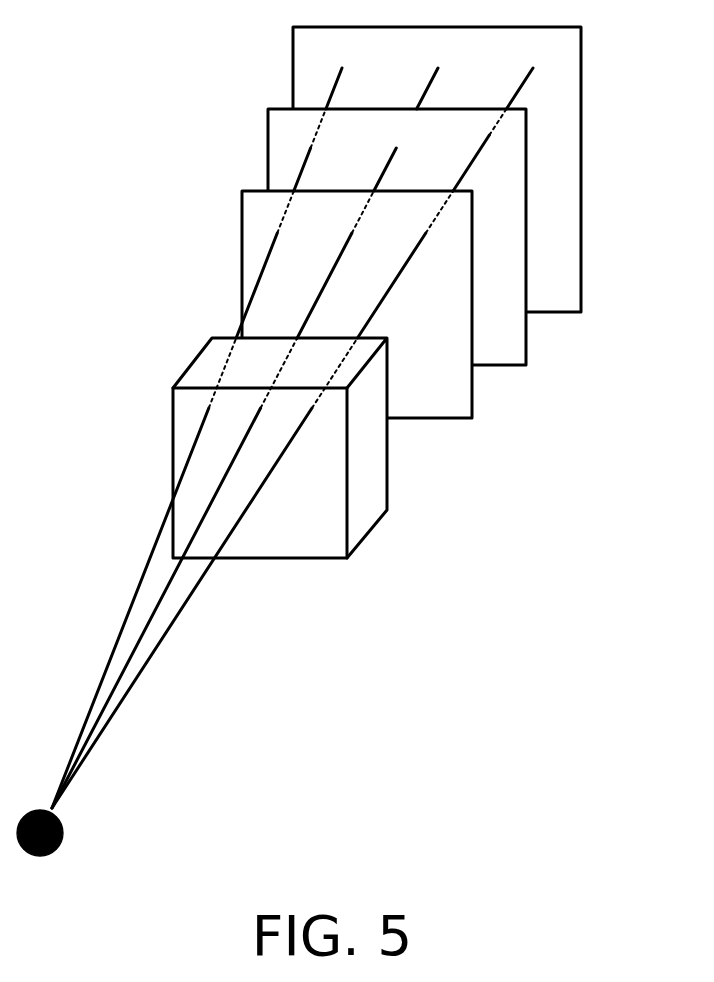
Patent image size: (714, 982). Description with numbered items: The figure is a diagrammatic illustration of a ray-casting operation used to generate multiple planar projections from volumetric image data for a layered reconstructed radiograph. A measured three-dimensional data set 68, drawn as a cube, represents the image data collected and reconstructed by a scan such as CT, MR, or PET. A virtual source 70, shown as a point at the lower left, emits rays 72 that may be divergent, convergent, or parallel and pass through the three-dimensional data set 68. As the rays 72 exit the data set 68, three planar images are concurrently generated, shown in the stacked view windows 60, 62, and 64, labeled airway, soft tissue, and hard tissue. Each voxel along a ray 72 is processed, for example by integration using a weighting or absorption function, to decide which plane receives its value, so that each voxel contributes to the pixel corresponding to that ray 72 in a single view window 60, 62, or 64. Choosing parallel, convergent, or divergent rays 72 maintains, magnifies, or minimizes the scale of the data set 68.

The view window 60 is at (472, 392).
The view window 62 is at (526, 338).
The view window 64 is at (581, 285).
The three-dimensional data set 68 is at (365, 507).
The virtual source 70 is at (62, 838).
The rays 72 is at (535, 78).